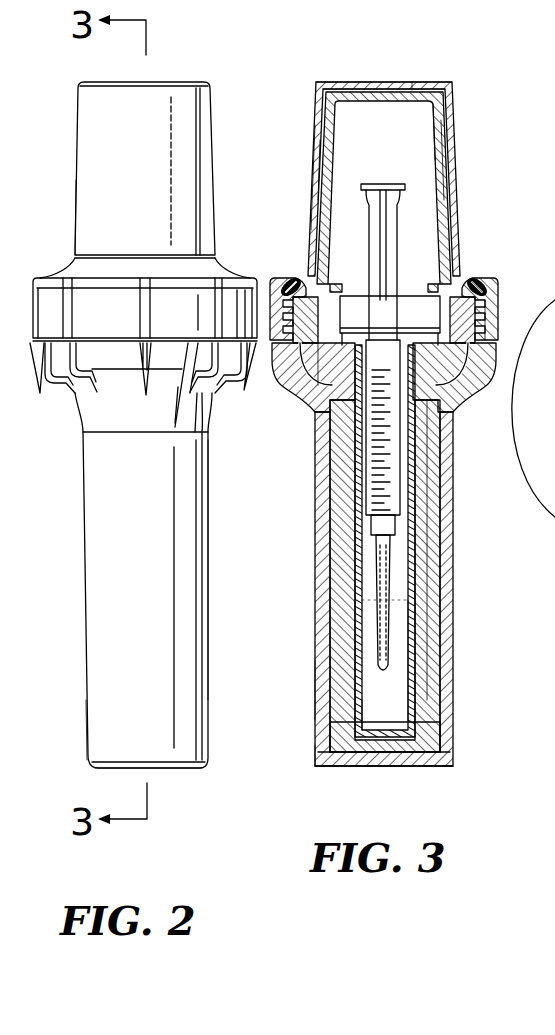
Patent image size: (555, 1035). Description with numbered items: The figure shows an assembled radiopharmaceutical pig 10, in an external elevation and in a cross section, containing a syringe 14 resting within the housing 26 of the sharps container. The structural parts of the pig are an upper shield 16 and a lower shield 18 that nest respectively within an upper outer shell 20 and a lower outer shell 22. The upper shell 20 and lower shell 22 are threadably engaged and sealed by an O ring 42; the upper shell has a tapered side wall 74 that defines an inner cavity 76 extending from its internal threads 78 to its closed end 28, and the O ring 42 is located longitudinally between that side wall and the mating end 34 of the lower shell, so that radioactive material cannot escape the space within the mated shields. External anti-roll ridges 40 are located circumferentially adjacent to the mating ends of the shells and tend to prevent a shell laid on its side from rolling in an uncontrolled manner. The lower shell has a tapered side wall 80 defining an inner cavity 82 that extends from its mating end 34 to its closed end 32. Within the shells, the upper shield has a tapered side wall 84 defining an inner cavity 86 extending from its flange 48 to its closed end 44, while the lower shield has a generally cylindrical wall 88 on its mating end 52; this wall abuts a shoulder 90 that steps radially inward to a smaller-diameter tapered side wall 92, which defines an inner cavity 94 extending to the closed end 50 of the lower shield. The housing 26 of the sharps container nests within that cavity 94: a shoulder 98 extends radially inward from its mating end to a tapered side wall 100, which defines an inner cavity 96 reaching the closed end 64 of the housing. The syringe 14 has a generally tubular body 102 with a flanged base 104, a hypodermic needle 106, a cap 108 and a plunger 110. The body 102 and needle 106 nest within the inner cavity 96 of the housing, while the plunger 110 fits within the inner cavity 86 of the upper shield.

In FIG. 2, the radiopharmaceutical pig 10 is at (76, 772).
In FIG. 3, the radiopharmaceutical pig 10 is at (410, 52).
In FIG. 3, the syringe 14 is at (381, 176).
In FIG. 3, the upper shield 16 is at (448, 92).
In FIG. 3, the lower shield 18 is at (324, 755).
In FIG. 2, the upper outer shell 20 is at (72, 178).
In FIG. 3, the upper outer shell 20 is at (306, 94).
In FIG. 2, the lower outer shell 22 is at (218, 680).
In FIG. 3, the lower outer shell 22 is at (308, 690).
In FIG. 3, the lower housing 26 is at (420, 668).
In FIG. 2, the closed end 28 is at (172, 82).
In FIG. 3, the closed end 28 is at (425, 82).
In FIG. 2, the closed end 32 is at (172, 770).
In FIG. 3, the closed end 32 is at (388, 768).
In FIG. 3, the mating end 34 is at (488, 310).
In FIG. 2, the anti-roll ridges 40 is at (143, 352).
In FIG. 3, the O ring 42 is at (482, 282).
In FIG. 3, the closed end 44 is at (378, 92).
In FIG. 3, the flange 48 is at (470, 280).
In FIG. 3, the closed end 50 is at (396, 744).
In FIG. 3, the mating end 52 is at (304, 278).
In FIG. 3, the closed end 64 is at (398, 722).
In FIG. 2, the tapered side wall 74 is at (76, 222).
In FIG. 3, the tapered side wall 74 is at (314, 122).
In FIG. 3, the inner cavity 76 is at (320, 152).
In FIG. 3, the internal threads 78 is at (497, 300).
In FIG. 2, the tapered side wall 80 is at (86, 616).
In FIG. 3, the tapered side wall 80 is at (455, 466).
In FIG. 3, the inner cavity 82 is at (425, 528).
In FIG. 3, the tapered side wall 84 is at (448, 126).
In FIG. 3, the inner cavity 86 is at (430, 112).
In FIG. 3, the cylindrical wall 88 is at (282, 352).
In FIG. 3, the shoulder 90 is at (328, 372).
In FIG. 3, the tapered side wall 92 is at (430, 582).
In FIG. 3, the inner cavity 94 is at (420, 548).
In FIG. 3, the inner cavity 96 is at (362, 716).
In FIG. 3, the shoulder 98 is at (440, 365).
In FIG. 3, the tapered side wall 100 is at (411, 692).
In FIG. 3, the tubular body 102 is at (345, 415).
In FIG. 3, the flanged base 104 is at (432, 295).
In FIG. 3, the hypodermic needle 106 is at (392, 605).
In FIG. 3, the cap 108 is at (388, 633).
In FIG. 3, the plunger 110 is at (401, 228).